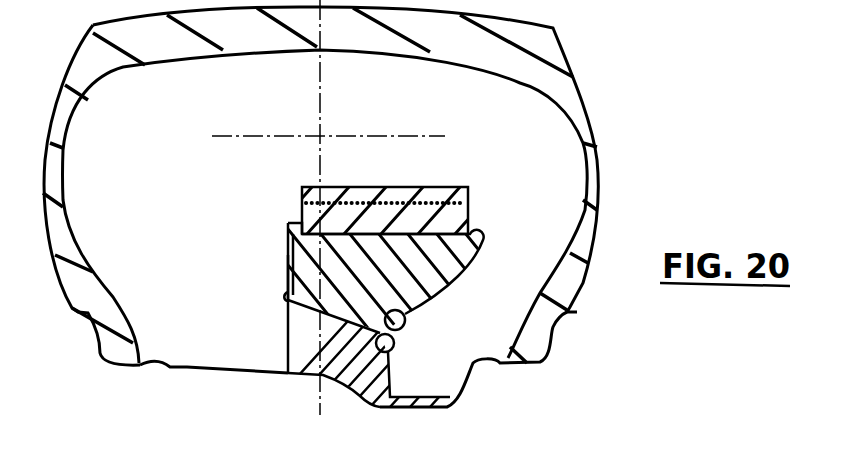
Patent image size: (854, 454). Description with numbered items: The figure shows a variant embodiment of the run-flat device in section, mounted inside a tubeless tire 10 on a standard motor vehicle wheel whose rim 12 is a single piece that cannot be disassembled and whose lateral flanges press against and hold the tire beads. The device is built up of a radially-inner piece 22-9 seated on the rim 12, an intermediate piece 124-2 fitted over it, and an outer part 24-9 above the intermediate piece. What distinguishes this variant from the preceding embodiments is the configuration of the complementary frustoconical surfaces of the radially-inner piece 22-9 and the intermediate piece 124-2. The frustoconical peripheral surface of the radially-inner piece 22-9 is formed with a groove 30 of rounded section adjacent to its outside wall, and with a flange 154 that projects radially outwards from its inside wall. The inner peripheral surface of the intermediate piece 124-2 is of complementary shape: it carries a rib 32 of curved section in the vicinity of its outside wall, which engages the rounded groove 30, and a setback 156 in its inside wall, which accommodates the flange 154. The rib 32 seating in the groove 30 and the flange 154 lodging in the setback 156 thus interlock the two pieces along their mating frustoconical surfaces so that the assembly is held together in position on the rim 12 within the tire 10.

The tire 10 is at (597, 157).
The rim 12 is at (187, 363).
The radially-inner piece 22-9 is at (288, 347).
The insert ring 24-9 is at (423, 187).
The intermediate piece 124-2 is at (287, 227).
The flange 154 is at (287, 297).
The setback 156 is at (288, 280).
The groove 30 is at (395, 350).
The rib 32 is at (404, 319).